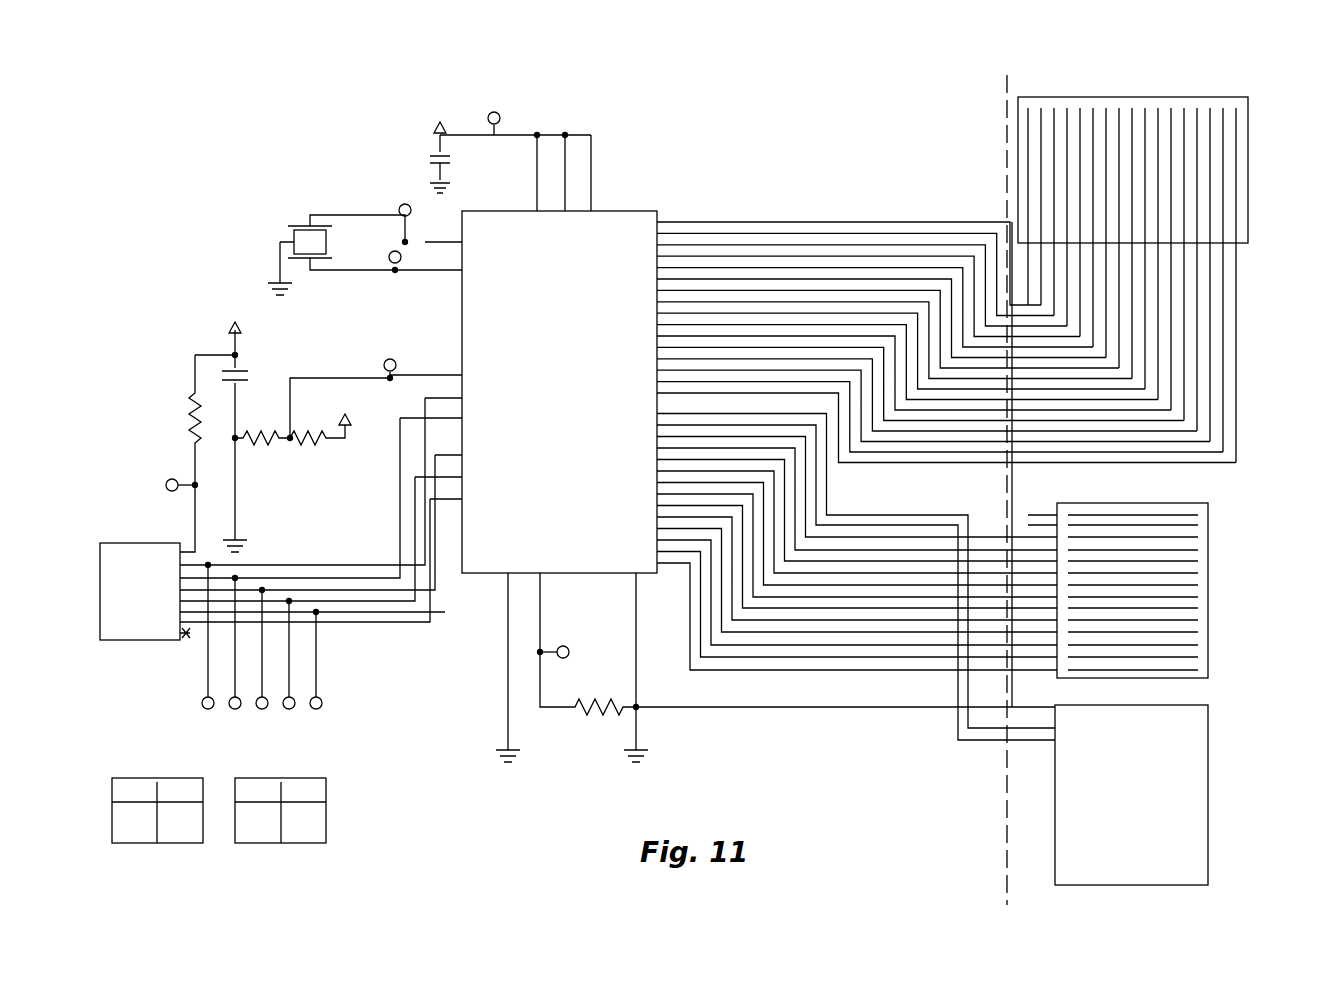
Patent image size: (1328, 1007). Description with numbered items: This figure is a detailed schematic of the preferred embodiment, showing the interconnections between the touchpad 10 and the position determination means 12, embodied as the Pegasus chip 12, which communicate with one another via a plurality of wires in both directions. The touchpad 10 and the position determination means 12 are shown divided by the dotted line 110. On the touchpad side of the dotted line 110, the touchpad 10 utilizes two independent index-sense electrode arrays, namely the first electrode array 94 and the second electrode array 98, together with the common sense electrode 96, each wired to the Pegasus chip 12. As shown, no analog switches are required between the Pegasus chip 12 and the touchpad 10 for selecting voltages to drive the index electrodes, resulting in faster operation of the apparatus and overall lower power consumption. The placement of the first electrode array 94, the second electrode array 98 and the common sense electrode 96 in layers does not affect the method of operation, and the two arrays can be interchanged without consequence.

The touchpad 10 is at (1201, 86).
The position determination means 12 is at (914, 108).
The first electrode array 94 is at (1250, 195).
The common sense electrode 96 is at (1210, 776).
The second electrode array 98 is at (1210, 594).
The dotted line 110 is at (1013, 86).